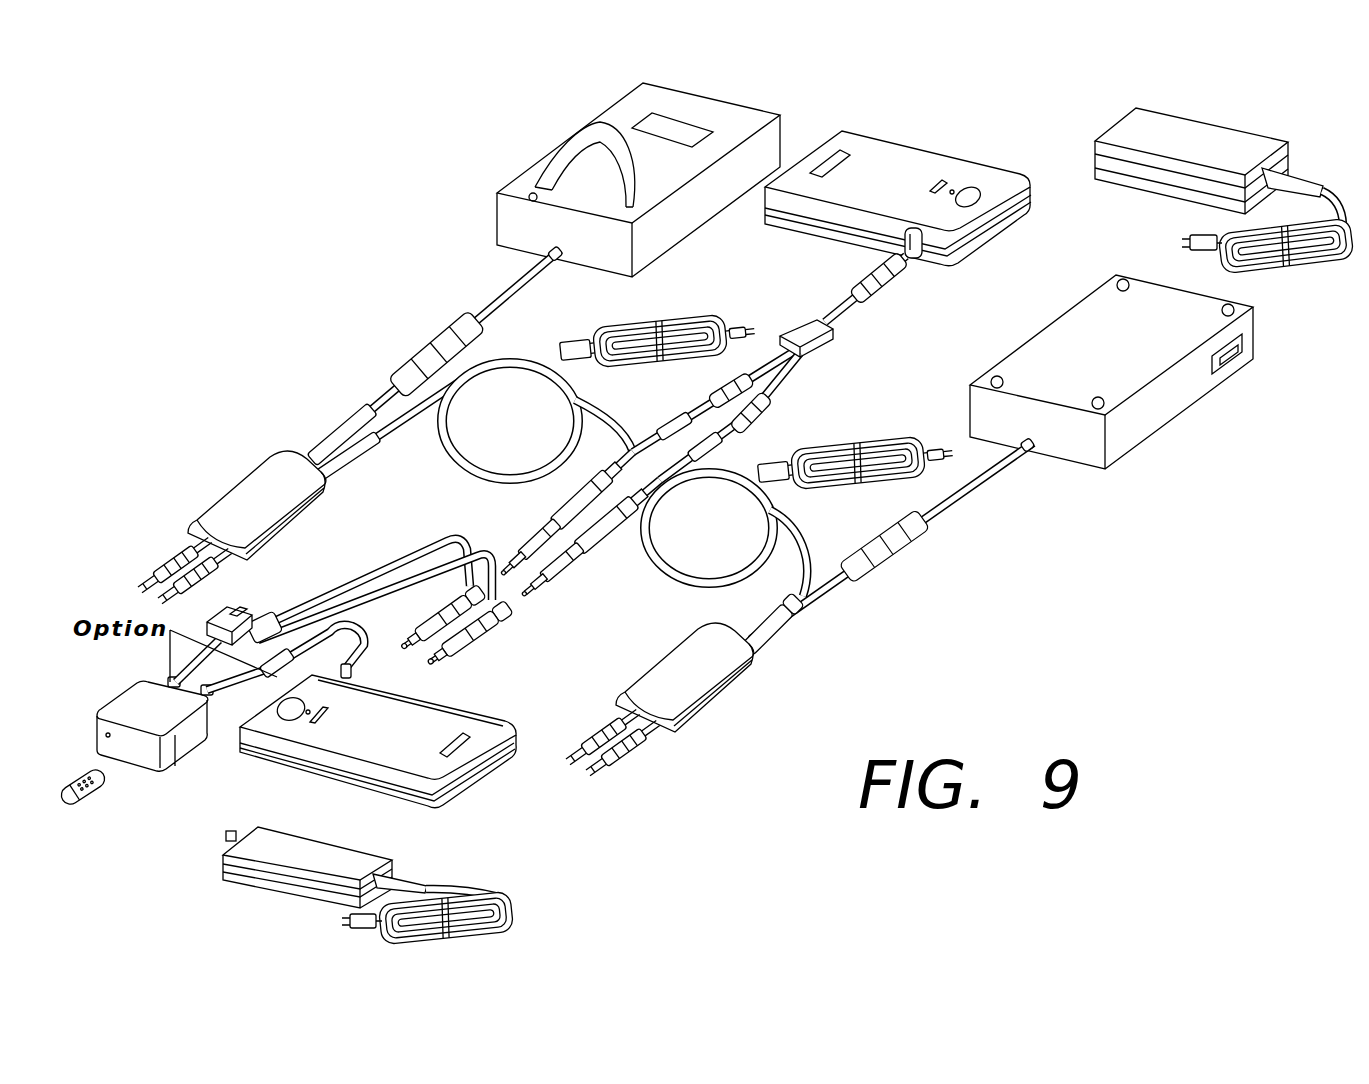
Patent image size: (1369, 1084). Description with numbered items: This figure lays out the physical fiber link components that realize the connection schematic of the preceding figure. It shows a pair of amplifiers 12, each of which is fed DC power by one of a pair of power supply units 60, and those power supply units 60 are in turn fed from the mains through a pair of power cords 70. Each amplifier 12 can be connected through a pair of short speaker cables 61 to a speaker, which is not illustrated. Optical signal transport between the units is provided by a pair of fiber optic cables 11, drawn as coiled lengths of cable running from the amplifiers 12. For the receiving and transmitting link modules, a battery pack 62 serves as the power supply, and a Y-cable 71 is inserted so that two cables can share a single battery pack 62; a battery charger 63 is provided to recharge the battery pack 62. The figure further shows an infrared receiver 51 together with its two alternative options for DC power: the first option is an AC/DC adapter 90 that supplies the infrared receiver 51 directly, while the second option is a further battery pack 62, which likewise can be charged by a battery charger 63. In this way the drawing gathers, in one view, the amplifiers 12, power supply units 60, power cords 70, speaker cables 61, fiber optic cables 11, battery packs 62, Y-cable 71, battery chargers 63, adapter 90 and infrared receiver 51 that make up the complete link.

The fiber optic cable 11 is at (440, 427).
The amplifier 12 is at (237, 488).
The infrared receiver 51 is at (122, 698).
The power supply unit 60 is at (608, 122).
The short speaker cable 61 is at (165, 580).
The battery pack 62 is at (923, 148).
The battery charger 63 is at (1152, 188).
The power cord 70 is at (703, 320).
The Y-cable 71 is at (827, 337).
The AC/DC adapter 90 is at (244, 620).